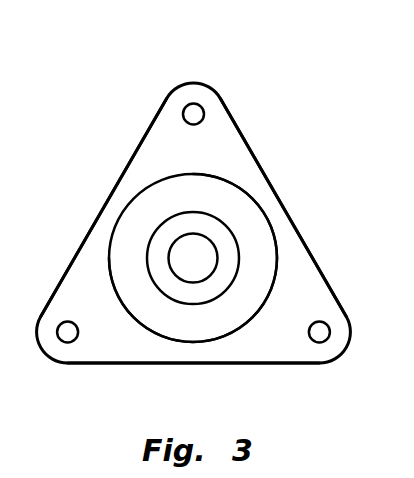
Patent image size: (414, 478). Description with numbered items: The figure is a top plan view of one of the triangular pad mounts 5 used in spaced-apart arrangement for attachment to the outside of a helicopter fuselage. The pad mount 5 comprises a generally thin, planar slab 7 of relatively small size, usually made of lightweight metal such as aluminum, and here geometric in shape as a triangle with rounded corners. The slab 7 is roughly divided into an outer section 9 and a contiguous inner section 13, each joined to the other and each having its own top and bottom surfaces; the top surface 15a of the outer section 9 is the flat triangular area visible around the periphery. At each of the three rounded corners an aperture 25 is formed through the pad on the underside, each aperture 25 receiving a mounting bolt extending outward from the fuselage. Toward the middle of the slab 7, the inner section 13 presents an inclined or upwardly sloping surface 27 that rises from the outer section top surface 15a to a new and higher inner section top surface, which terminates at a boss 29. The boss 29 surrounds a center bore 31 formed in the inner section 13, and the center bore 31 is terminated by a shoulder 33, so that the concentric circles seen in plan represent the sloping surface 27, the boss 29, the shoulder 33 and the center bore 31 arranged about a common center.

The pad mount 5 is at (232, 150).
The planar slab 7 is at (150, 155).
The outer section 9 is at (278, 220).
The inner section 13 is at (135, 242).
The top surface of outer section 15a is at (112, 355).
The aperture 25 is at (193, 112).
The inclined surface 27 is at (228, 202).
The boss 29 is at (205, 287).
The center bore 31 is at (200, 260).
The shoulder 33 is at (178, 341).